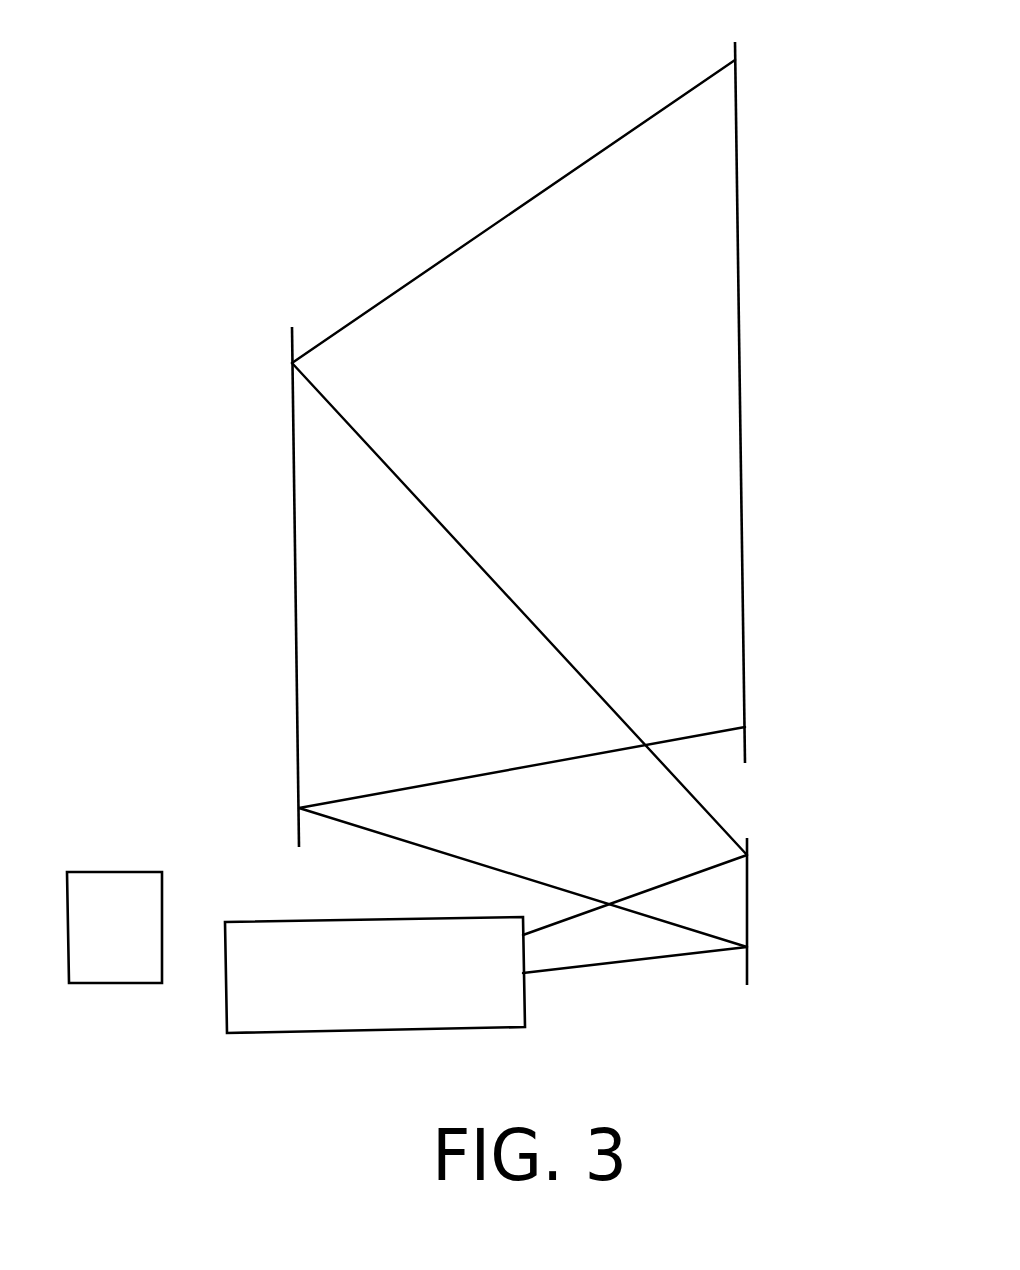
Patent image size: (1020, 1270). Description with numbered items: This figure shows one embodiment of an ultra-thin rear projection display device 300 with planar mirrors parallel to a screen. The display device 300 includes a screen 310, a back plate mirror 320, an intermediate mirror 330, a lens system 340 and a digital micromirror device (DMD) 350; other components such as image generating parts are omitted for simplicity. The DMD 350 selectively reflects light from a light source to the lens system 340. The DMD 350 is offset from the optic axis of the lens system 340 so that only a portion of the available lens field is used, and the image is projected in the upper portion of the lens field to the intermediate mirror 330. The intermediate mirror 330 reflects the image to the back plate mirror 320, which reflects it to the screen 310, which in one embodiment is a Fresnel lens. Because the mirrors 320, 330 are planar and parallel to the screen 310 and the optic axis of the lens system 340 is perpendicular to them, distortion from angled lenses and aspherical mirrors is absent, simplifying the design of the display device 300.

The ultra-thin rear projection display device 300 is at (250, 144).
The screen 310 is at (740, 430).
The back plate mirror 320 is at (295, 552).
The intermediate mirror 330 is at (747, 912).
The lens system 340 is at (513, 1013).
The digital micromirror device (DMD) 350 is at (132, 983).